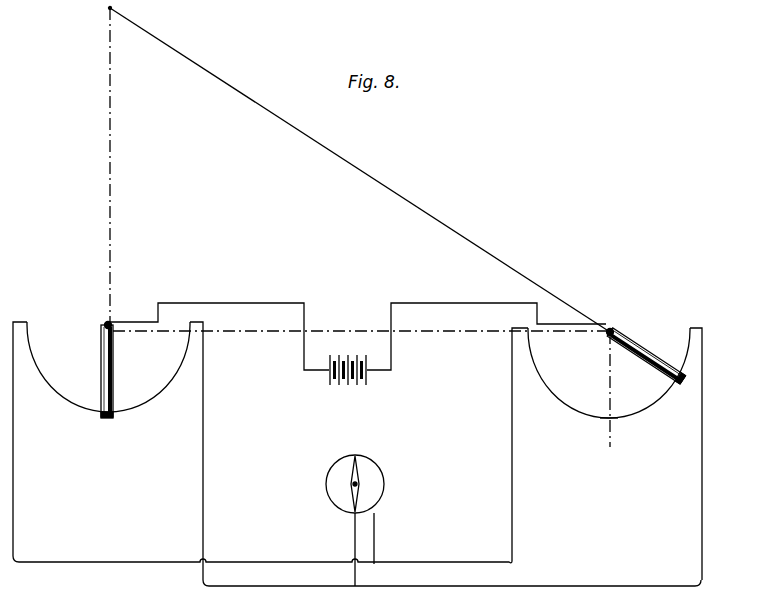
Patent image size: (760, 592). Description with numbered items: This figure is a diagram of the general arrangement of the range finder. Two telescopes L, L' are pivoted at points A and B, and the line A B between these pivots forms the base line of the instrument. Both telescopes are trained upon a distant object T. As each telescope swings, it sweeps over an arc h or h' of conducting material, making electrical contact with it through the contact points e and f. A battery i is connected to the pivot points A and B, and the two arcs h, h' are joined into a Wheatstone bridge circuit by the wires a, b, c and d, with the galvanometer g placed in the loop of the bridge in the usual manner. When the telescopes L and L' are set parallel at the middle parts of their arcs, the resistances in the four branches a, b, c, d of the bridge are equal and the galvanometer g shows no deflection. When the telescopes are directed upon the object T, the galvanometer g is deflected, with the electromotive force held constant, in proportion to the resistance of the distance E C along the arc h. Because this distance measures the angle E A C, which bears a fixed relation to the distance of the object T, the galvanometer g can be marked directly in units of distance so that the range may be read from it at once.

The object T is at (101, 16).
The pivot point A is at (616, 320).
The pivot point B is at (121, 315).
The contact point on arc h C is at (684, 392).
The middle point of arc h E is at (600, 430).
The telescope L is at (646, 356).
The telescope L' is at (118, 371).
The wire a is at (262, 442).
The wire b is at (445, 454).
The wire c is at (703, 454).
The wire d is at (521, 444).
The contact point e is at (670, 385).
The contact point f is at (116, 405).
The galvanometer g is at (362, 520).
The arc of conducting material h is at (609, 373).
The arc of conducting material h' is at (108, 368).
The battery i is at (348, 380).